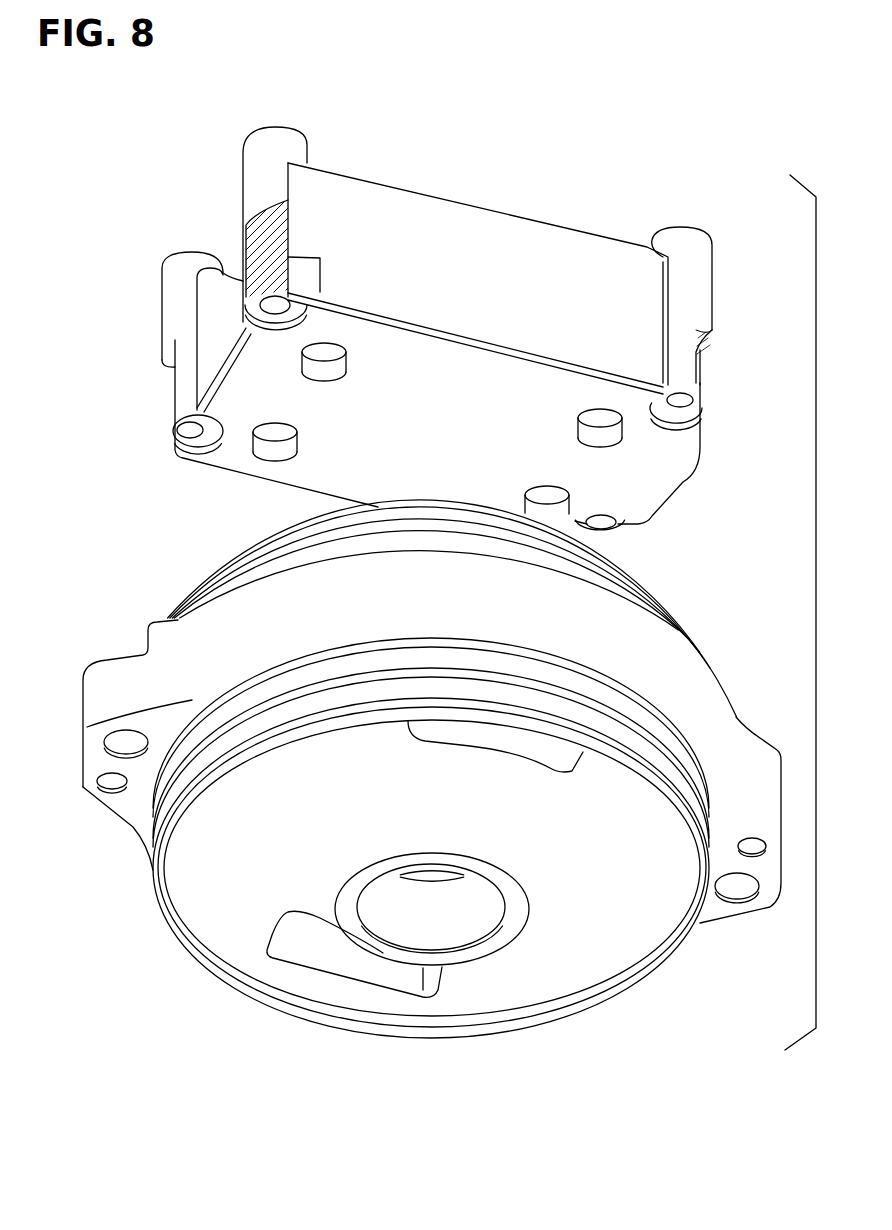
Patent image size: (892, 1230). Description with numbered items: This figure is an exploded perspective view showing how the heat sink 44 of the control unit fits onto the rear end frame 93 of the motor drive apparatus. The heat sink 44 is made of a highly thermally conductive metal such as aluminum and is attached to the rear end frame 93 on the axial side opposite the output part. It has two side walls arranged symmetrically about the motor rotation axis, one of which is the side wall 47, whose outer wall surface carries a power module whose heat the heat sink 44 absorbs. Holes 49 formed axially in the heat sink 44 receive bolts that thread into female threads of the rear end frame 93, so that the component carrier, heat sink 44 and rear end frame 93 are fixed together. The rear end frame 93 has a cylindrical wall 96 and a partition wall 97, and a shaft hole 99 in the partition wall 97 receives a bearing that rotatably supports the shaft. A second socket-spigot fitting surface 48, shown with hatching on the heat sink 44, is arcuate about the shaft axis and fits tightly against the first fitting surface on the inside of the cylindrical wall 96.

The heat sink 44 is at (437, 426).
The side wall 47 is at (398, 210).
The second socket-spigot fitting surface 48 is at (247, 255).
The hole 49 is at (243, 316).
The rear end frame 93 is at (83, 710).
The cylindrical wall 96 is at (243, 580).
The partition wall 97 is at (213, 860).
The shaft hole 99 is at (395, 918).